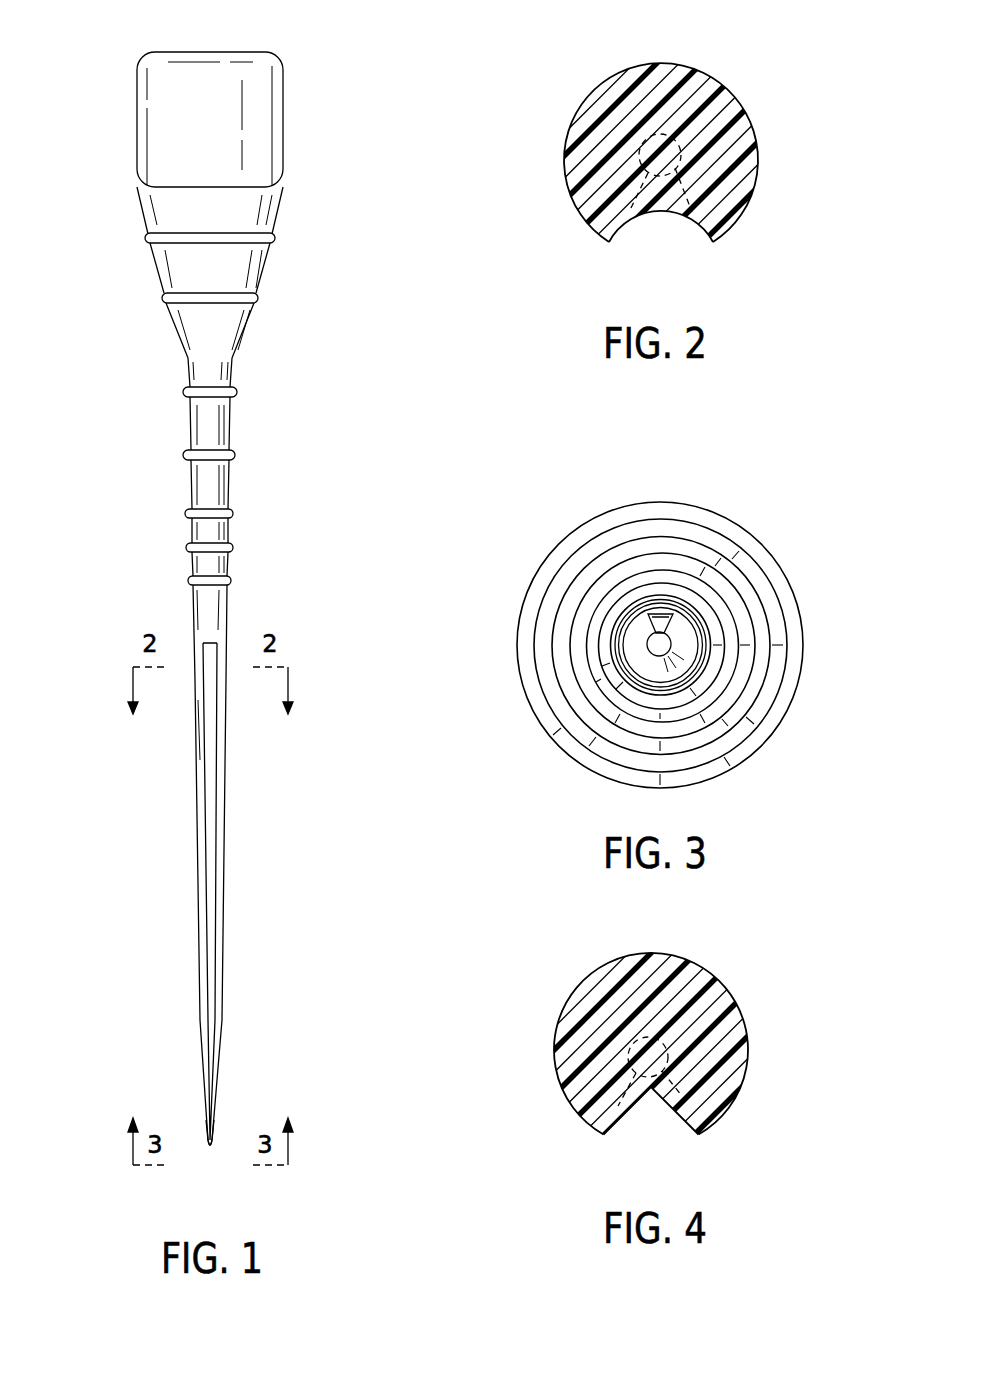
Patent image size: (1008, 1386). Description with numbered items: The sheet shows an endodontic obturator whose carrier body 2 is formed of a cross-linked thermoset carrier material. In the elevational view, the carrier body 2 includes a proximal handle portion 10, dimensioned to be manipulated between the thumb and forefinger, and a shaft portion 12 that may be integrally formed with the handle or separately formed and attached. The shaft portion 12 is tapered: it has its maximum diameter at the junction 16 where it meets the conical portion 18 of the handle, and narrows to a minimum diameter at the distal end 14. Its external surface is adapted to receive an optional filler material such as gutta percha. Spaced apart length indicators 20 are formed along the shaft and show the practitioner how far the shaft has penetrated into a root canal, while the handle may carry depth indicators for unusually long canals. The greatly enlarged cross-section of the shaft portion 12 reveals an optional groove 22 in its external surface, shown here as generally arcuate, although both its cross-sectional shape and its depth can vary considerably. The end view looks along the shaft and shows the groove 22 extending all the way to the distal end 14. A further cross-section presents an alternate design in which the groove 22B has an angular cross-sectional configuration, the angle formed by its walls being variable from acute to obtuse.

In FIG. 1, the carrier body 2 is at (90, 404).
In FIG. 2, the carrier body 2 is at (572, 72).
In FIG. 3, the carrier body 2 is at (618, 462).
In FIG. 4, the carrier body 2 is at (572, 955).
In FIG. 1, the handle portion 10 is at (155, 95).
In FIG. 3, the handle portion 10 is at (803, 632).
In FIG. 1, the shaft portion 12 is at (207, 487).
In FIG. 2, the shaft portion 12 is at (720, 108).
In FIG. 3, the shaft portion 12 is at (687, 618).
In FIG. 4, the shaft portion 12 is at (712, 1007).
In FIG. 1, the distal end 14 is at (210, 1150).
In FIG. 2, the distal end 14 is at (758, 178).
In FIG. 3, the distal end 14 is at (664, 648).
In FIG. 1, the junction 16 is at (186, 362).
In FIG. 1, the conical portion 18 is at (178, 266).
In FIG. 1, the length indicators 20 is at (147, 238).
In FIG. 3, the length indicators 20 is at (630, 597).
In FIG. 1, the groove 22 is at (207, 775).
In FIG. 2, the groove 22 is at (653, 218).
In FIG. 3, the groove 22 is at (660, 614).
In FIG. 4, the angular groove 22B is at (631, 1103).